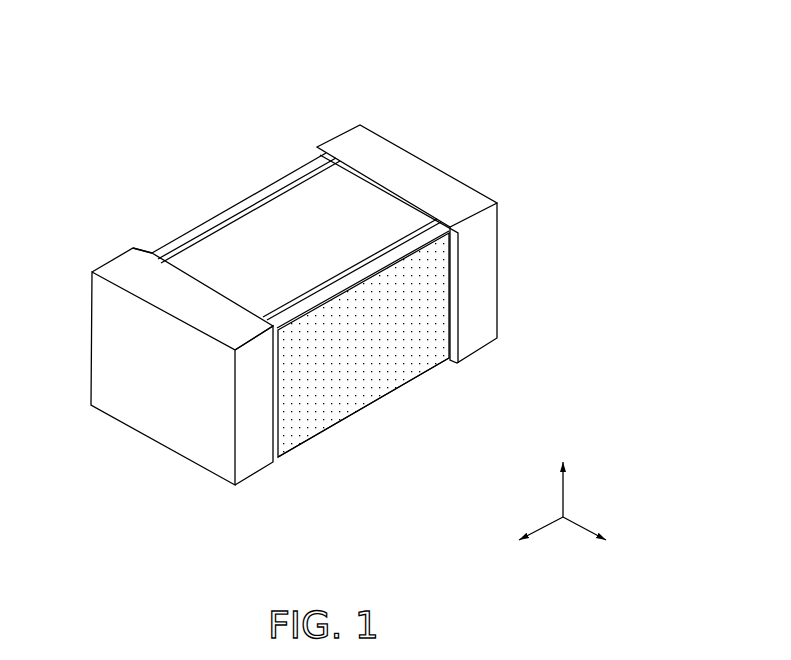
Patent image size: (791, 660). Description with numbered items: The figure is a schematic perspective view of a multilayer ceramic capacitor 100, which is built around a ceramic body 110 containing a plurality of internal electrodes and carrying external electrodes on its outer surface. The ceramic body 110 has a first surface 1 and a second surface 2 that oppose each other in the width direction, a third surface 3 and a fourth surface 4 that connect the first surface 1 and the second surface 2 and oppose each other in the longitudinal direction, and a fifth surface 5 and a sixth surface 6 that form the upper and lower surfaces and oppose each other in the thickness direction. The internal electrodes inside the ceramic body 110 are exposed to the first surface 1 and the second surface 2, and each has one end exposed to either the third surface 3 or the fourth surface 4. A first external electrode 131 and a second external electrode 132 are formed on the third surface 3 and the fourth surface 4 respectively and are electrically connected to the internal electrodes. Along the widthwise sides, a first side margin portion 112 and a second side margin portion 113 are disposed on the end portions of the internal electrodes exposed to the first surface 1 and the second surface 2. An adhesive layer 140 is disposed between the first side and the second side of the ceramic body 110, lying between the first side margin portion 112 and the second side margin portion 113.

The multilayer ceramic capacitor 100 is at (146, 26).
The first surface 1 is at (252, 176).
The second surface 2 is at (418, 323).
The third surface 3 is at (184, 429).
The fourth surface 4 is at (423, 143).
The fifth surface 5 is at (320, 205).
The sixth surface 6 is at (313, 443).
The ceramic body 110 is at (298, 199).
The first side margin portion 112 is at (187, 233).
The second side margin portion 113 is at (433, 233).
The first external electrode 131 is at (253, 468).
The second external electrode 132 is at (488, 305).
The adhesive layer 140 is at (319, 145).